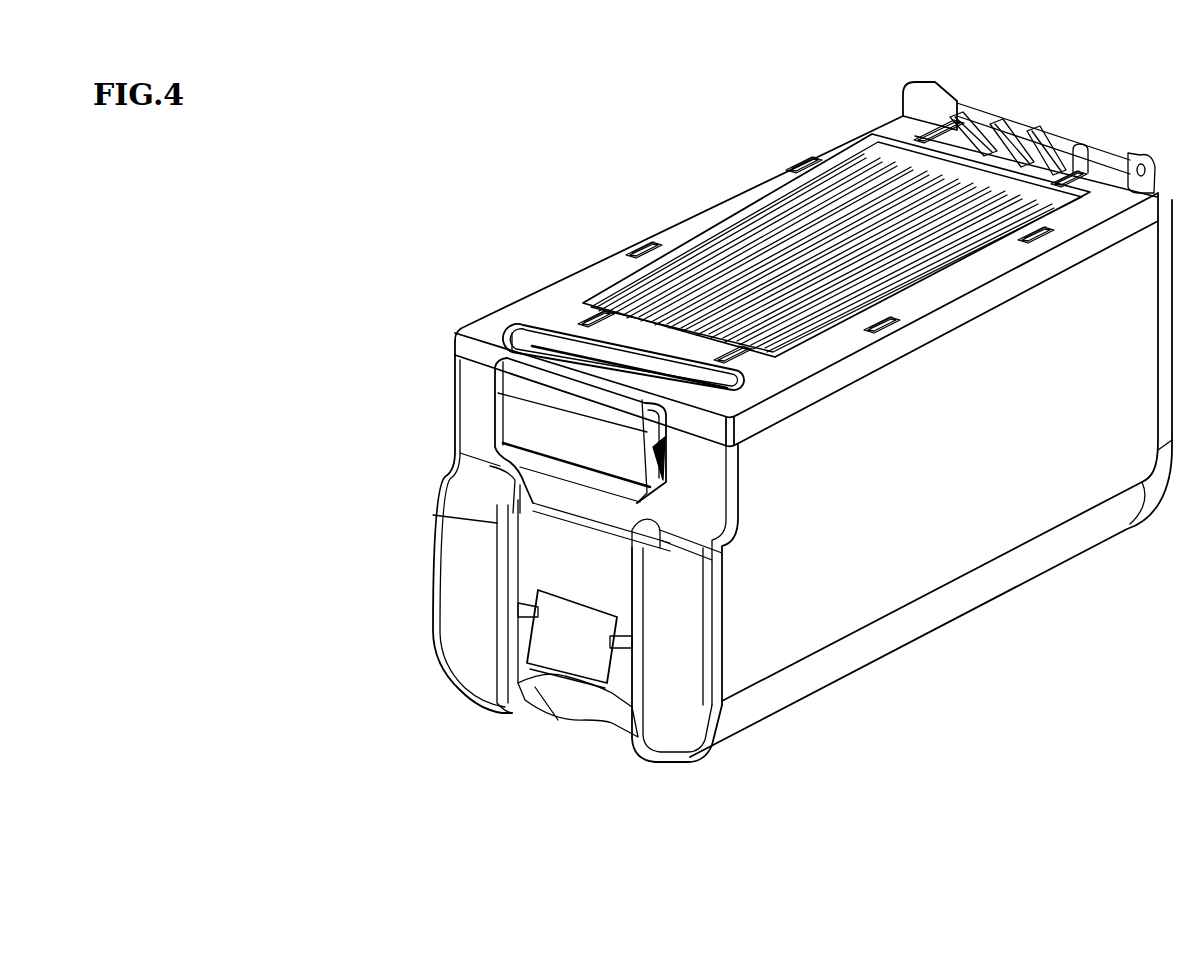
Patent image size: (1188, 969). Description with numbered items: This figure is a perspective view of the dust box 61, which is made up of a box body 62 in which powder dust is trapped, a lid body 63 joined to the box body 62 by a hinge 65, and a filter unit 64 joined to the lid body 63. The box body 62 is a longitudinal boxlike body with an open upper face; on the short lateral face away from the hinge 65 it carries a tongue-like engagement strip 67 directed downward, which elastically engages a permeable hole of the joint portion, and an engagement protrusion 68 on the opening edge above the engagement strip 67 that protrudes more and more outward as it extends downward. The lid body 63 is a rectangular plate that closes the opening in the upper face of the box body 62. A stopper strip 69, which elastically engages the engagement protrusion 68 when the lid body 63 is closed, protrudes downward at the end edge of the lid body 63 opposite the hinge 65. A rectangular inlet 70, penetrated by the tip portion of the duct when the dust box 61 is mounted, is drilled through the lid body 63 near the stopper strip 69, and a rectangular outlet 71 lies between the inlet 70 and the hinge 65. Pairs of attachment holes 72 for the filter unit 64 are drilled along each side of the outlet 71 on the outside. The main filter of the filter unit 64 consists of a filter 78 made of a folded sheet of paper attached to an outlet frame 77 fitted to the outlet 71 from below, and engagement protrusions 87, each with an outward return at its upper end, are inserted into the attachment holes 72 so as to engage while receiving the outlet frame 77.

The dust box 61 is at (794, 79).
The box body 62 is at (923, 572).
The lid body 63 is at (708, 207).
The filter unit 64 is at (876, 177).
The hinge 65 is at (1037, 130).
The engagement strip 67 is at (572, 660).
The engagement protrusion 68 is at (637, 487).
The stopper strip 69 is at (515, 420).
The inlet 70 is at (548, 325).
The outlet 71 is at (947, 275).
The attachment holes 72 is at (790, 163).
The outlet frame 77 is at (957, 170).
The filter 78 is at (713, 283).
The engagement protrusions 87 is at (807, 153).